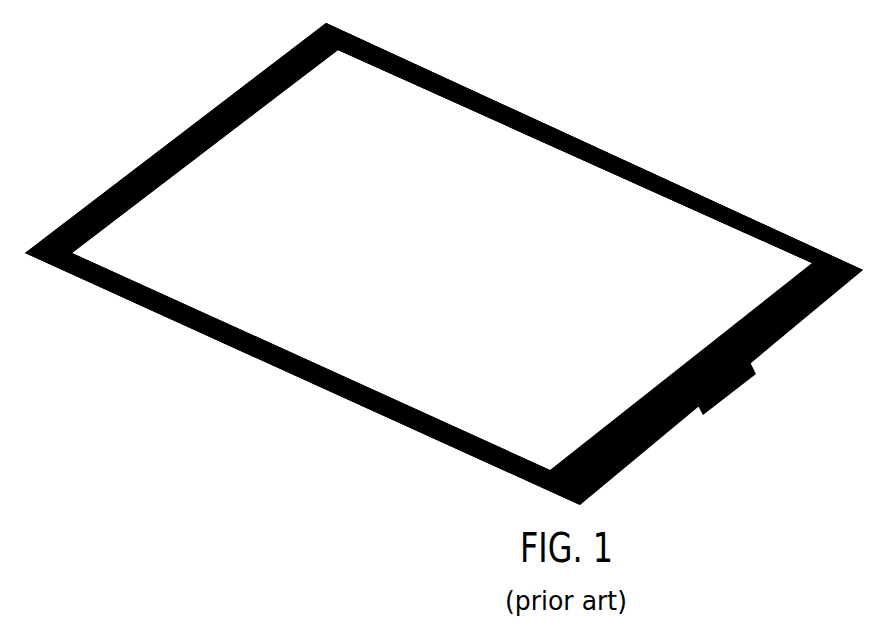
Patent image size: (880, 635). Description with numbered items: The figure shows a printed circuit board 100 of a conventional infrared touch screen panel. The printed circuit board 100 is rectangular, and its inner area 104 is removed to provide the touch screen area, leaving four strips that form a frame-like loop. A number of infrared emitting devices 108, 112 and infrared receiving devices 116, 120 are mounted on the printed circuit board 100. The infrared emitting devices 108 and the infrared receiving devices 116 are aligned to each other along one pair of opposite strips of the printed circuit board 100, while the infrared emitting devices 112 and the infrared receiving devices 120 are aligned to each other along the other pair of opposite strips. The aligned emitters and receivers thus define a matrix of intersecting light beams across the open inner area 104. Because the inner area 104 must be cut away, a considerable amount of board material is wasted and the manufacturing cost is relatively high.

The printed circuit board 100 is at (726, 209).
The inner area 104 is at (518, 145).
The infrared emitting devices 108 is at (190, 127).
The infrared emitting devices 112 is at (213, 340).
The infrared receiving devices 116 is at (768, 352).
The infrared receiving devices 120 is at (650, 172).